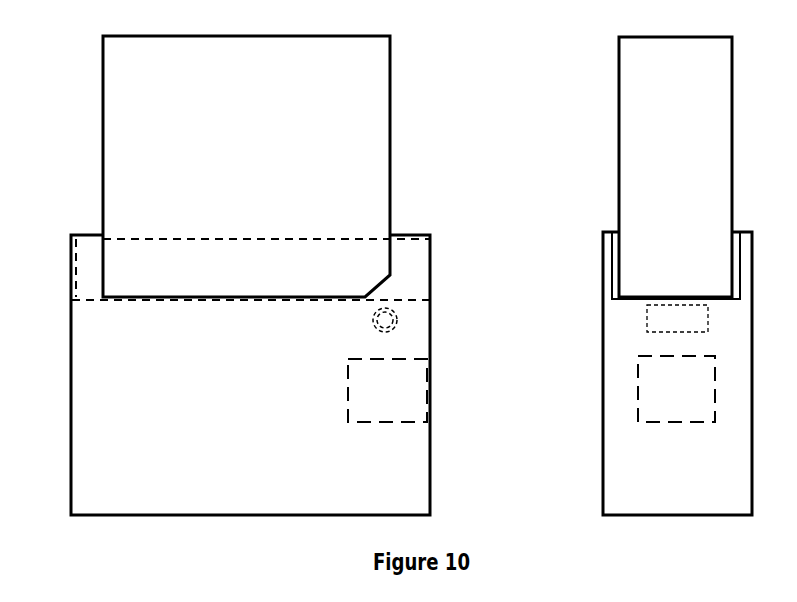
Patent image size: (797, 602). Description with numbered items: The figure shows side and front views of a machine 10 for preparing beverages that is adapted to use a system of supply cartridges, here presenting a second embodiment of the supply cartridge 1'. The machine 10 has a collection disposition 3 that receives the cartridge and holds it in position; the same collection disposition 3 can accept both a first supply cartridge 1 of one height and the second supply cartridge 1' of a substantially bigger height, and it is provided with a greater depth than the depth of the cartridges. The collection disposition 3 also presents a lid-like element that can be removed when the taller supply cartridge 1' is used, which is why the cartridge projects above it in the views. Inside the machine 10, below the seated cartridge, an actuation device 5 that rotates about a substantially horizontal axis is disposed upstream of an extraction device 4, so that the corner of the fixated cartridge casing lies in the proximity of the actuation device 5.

The first supply cartridge 1 is at (675, 167).
The second supply cartridge 1' is at (227, 166).
The collection disposition 3 is at (778, 218).
The extraction device 4 is at (531, 389).
The actuation device 5 is at (524, 321).
The machine for preparing beverages 10 is at (388, 360).